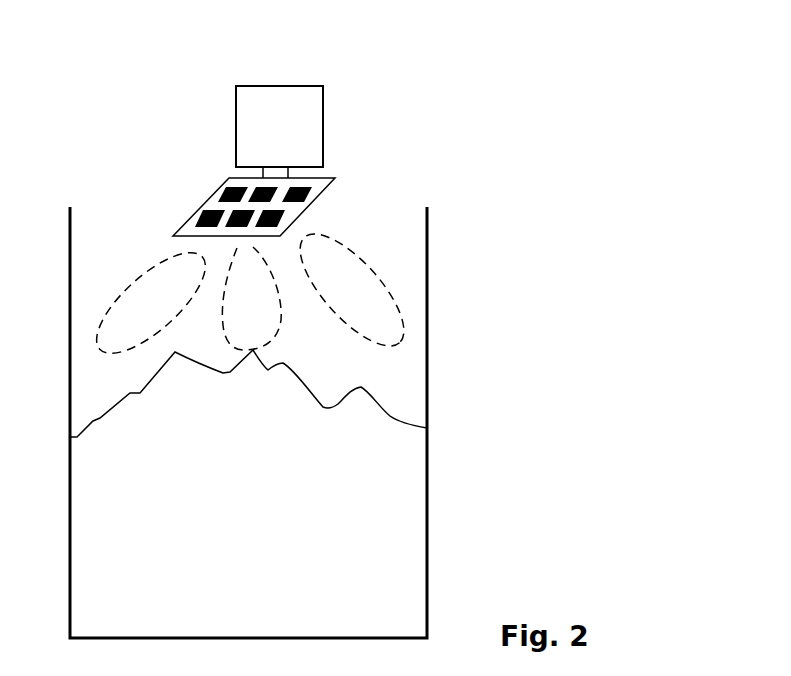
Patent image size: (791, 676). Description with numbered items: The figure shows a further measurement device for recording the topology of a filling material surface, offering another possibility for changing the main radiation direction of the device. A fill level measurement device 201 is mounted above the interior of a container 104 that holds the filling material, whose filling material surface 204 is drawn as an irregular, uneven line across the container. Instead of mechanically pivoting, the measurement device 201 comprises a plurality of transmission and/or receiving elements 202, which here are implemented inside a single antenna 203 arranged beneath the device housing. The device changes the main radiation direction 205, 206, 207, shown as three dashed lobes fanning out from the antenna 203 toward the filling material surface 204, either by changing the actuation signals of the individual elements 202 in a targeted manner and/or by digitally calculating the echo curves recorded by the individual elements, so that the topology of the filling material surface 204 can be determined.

The container 104 is at (427, 487).
The fill level measurement device 201 is at (135, 83).
The transmission and/or receiving elements 202 is at (300, 194).
The antenna 203 is at (223, 196).
The filling material surface 204 is at (362, 388).
The main radiation direction 205 is at (132, 292).
The main radiation direction 206 is at (227, 343).
The main radiation direction 207 is at (358, 260).